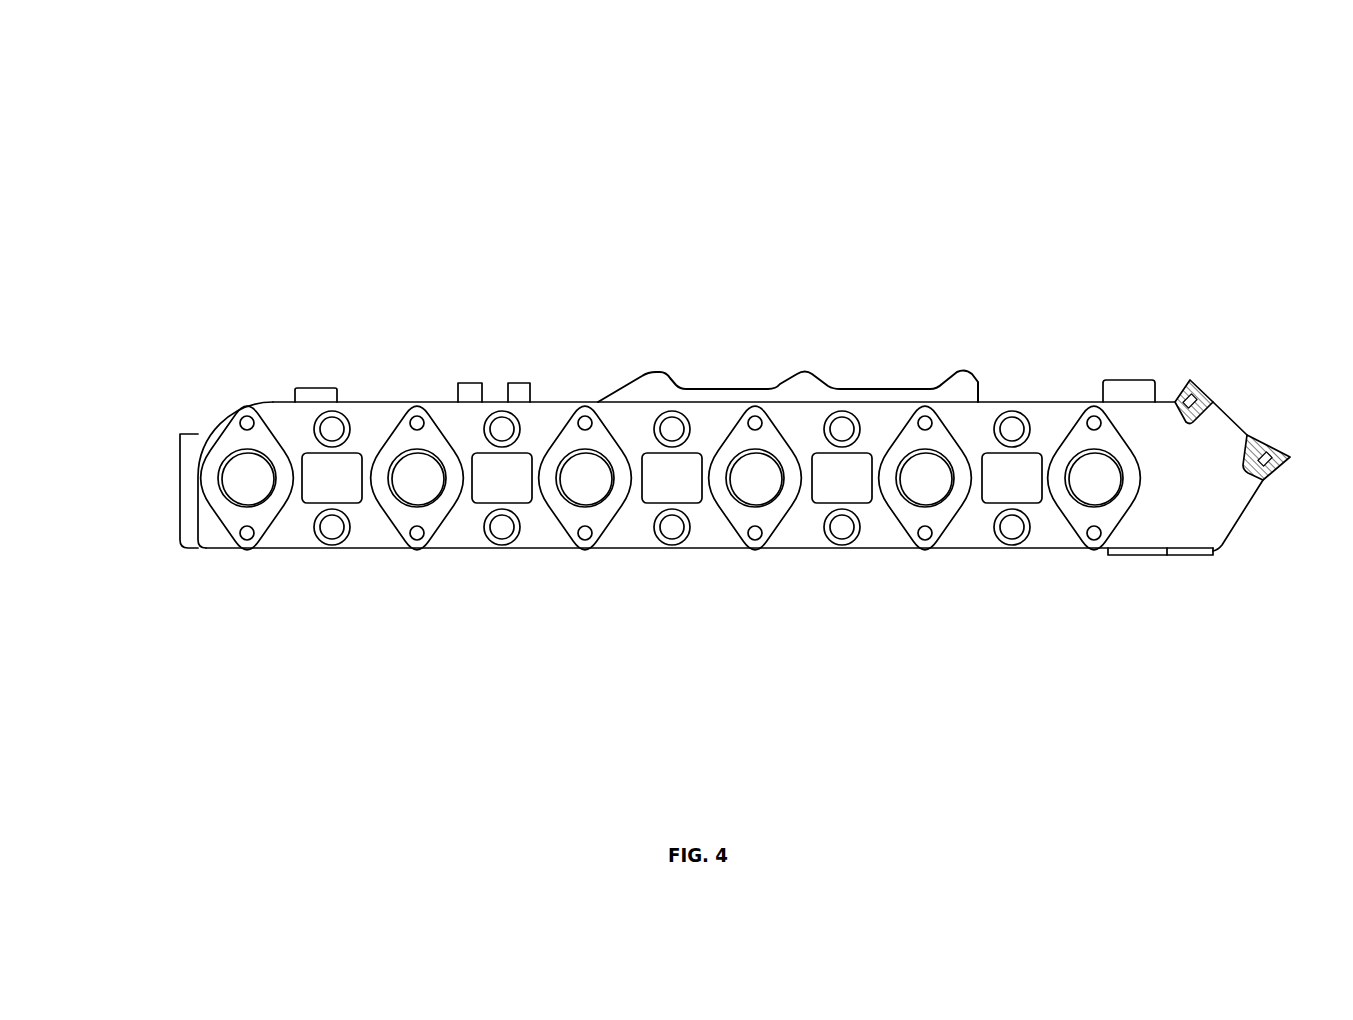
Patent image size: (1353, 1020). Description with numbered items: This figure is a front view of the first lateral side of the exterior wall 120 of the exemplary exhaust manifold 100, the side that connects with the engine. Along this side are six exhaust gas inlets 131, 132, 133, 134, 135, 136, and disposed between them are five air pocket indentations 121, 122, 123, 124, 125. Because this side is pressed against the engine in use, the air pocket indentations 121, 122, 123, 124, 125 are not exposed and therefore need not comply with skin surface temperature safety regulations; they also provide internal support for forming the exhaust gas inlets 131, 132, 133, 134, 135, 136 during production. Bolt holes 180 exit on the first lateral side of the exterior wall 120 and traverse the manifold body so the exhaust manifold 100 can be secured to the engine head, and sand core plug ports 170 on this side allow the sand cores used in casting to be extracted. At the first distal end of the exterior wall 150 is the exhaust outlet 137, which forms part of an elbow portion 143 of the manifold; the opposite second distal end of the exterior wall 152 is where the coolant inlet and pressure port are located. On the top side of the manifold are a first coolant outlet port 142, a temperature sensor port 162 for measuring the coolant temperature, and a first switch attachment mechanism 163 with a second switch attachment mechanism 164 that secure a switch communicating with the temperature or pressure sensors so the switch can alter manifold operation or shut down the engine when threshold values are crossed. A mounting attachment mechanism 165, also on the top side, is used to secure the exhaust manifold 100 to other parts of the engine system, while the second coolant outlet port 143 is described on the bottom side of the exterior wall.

The exhaust manifold 100 is at (183, 128).
The first lateral side of the exterior wall 120 is at (473, 548).
The air pocket indentation 121 is at (322, 493).
The air pocket indentation 122 is at (492, 493).
The air pocket indentation 123 is at (662, 493).
The air pocket indentation 124 is at (832, 493).
The air pocket indentation 125 is at (1103, 493).
The exhaust gas inlet 131 is at (250, 495).
The exhaust gas inlet 132 is at (418, 495).
The exhaust gas inlet 133 is at (588, 493).
The exhaust gas inlet 134 is at (758, 493).
The exhaust gas inlet 135 is at (928, 493).
The exhaust gas inlet 136 is at (1133, 554).
The exhaust outlet 137 is at (1237, 403).
The first coolant outlet port 142 is at (1115, 382).
The second coolant outlet port 143 is at (1173, 556).
The first distal end of the exterior wall 150 is at (1277, 432).
The second distal end of the exterior wall 152 is at (178, 433).
The temperature sensor port 162 is at (335, 388).
The first switch attachment mechanism 163 is at (470, 390).
The second switch attachment mechanism 164 is at (522, 390).
The mounting attachment mechanism 165 is at (787, 388).
The sand core plug port 170 is at (674, 420).
The bolt hole 180 is at (244, 416).